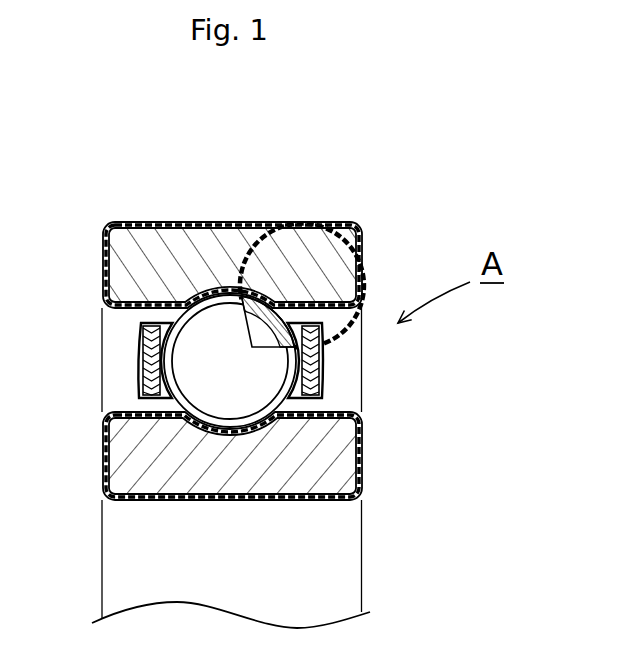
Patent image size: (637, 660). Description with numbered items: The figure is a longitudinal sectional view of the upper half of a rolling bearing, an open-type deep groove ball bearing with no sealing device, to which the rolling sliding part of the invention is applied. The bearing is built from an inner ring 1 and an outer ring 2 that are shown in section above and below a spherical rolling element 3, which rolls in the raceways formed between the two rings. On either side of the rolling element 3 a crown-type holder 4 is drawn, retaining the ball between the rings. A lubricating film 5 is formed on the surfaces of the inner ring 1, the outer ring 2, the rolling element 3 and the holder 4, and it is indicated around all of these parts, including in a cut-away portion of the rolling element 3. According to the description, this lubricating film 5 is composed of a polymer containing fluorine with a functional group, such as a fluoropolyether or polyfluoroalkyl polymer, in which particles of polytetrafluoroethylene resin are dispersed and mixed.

The inner ring 1 is at (272, 483).
The outer ring 2 is at (296, 232).
The rolling element 3 is at (203, 320).
The crown-type holder 4 is at (137, 343).
The lubricating film 5 is at (197, 296).